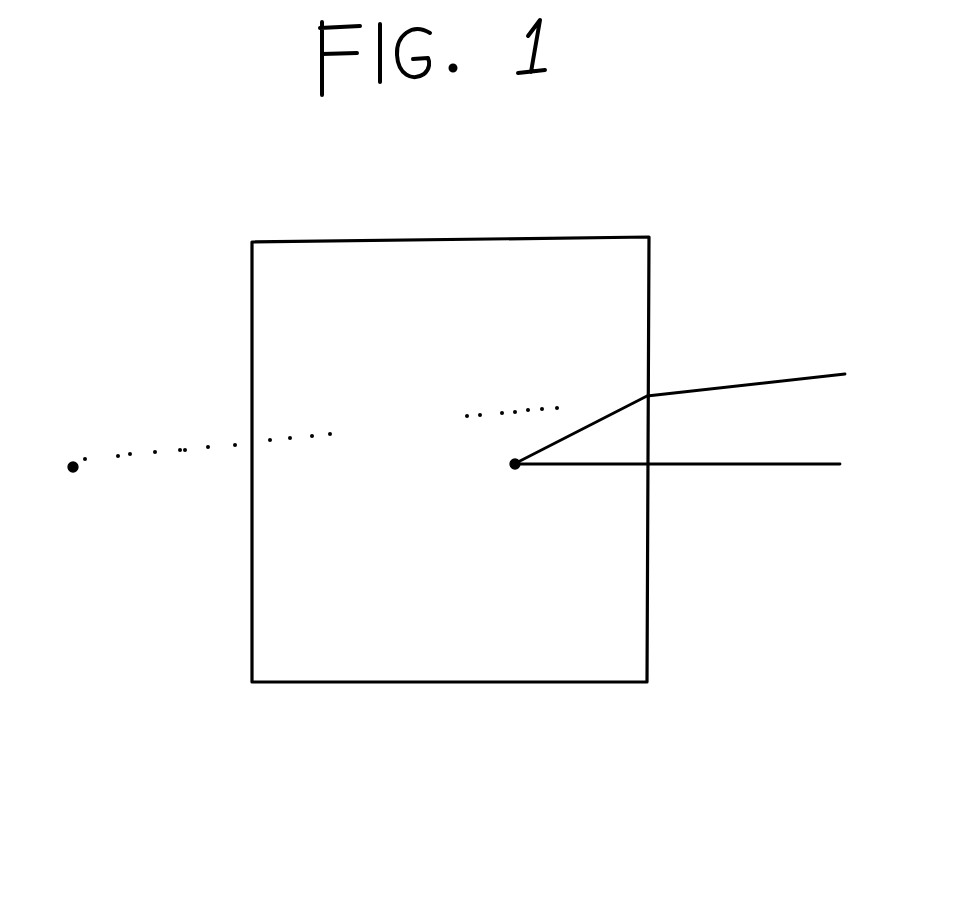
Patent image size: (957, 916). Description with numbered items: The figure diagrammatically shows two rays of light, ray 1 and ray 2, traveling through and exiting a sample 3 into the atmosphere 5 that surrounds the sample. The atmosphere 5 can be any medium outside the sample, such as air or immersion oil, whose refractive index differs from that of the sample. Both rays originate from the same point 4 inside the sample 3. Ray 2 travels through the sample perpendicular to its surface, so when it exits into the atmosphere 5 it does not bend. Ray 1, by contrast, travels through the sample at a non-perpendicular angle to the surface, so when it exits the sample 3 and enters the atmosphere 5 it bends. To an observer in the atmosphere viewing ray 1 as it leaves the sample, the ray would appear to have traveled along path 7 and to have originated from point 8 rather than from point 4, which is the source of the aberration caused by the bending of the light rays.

The ray 1 is at (825, 362).
The ray 2 is at (811, 479).
The sample 3 is at (515, 697).
The point 4 is at (524, 486).
The atmosphere 5 is at (862, 214).
The path 7 is at (472, 400).
The point 8 is at (92, 482).